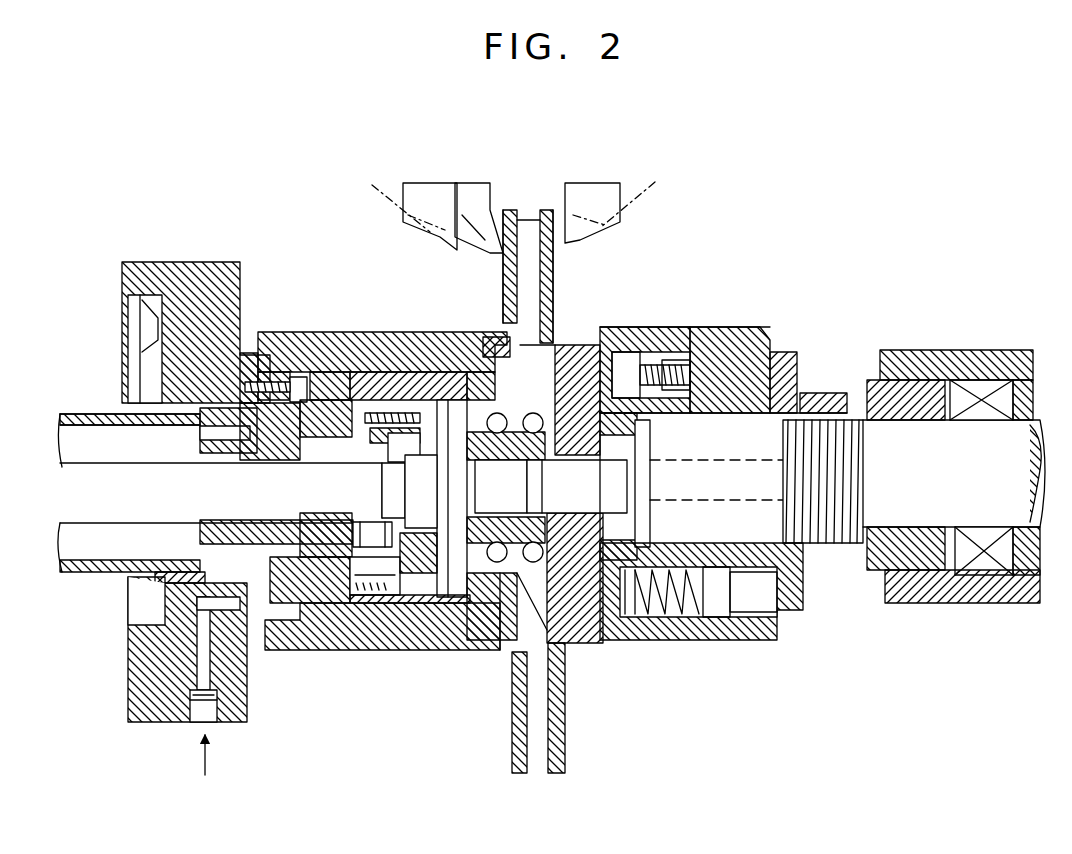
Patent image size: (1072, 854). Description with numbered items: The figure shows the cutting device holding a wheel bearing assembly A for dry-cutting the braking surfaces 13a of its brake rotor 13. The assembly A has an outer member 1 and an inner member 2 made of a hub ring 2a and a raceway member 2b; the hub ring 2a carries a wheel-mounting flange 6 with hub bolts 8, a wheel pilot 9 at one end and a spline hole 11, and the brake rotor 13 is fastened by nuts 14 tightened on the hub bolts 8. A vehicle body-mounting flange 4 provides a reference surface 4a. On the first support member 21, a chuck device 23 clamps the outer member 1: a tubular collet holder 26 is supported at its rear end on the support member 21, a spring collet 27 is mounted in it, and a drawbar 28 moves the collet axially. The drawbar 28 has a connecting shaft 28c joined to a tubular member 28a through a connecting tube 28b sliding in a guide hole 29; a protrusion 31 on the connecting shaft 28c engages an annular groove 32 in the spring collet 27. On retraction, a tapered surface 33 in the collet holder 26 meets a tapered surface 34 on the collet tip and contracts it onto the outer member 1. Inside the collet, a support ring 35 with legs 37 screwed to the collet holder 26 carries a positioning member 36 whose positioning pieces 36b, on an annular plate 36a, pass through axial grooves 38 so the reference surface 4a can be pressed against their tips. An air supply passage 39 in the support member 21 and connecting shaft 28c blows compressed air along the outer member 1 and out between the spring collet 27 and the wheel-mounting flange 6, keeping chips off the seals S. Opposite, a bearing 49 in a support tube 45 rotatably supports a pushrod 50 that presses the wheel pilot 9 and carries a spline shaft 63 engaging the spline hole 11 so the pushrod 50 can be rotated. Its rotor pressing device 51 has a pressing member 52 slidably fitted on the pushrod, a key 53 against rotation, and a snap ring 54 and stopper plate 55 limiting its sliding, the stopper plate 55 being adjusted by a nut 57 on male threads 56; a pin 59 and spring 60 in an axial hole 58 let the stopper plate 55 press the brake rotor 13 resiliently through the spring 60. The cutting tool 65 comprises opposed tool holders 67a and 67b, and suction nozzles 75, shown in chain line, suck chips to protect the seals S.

The outer member 1 is at (570, 517).
The inner member 2 is at (450, 398).
The hub ring 2a is at (575, 465).
The raceway member 2b is at (420, 462).
The vehicle body-mounting flange 4 is at (570, 385).
The reference surface 4a is at (560, 345).
The wheel-mounting flange 6 is at (580, 625).
The hub bolts 8 is at (655, 365).
The wheel pilot 9 is at (648, 447).
The spline hole 11 is at (502, 465).
The brake rotor 13 is at (530, 215).
The braking surfaces 13a is at (550, 215).
The nuts 14 is at (625, 352).
The first support member 21 is at (178, 262).
The chuck device 23 is at (283, 325).
The collet holder 26 is at (318, 340).
The spring collet 27 is at (375, 395).
The drawbar 28 is at (63, 408).
The tubular member 28a is at (100, 413).
The connecting tube 28b is at (200, 433).
The connecting shaft 28c is at (215, 474).
The guide hole 29 is at (180, 560).
The protrusion 31 is at (310, 605).
The annular groove 32 is at (345, 600).
The tapered surface 33 is at (470, 625).
The tapered surface 34 is at (500, 620).
The support ring 35 is at (355, 370).
The positioning member 36 is at (400, 372).
The annular plate 36a is at (420, 608).
The positioning pieces 36b is at (415, 412).
The legs 37 is at (375, 605).
The axial groove 38 is at (490, 340).
The air supply passage 39 is at (200, 665).
The support tube 45 is at (992, 357).
The bearing 49 is at (970, 392).
The pushrod 50 is at (898, 425).
The rotor pressing device 51 is at (718, 322).
The pressing member 52 is at (740, 345).
The key 53 is at (783, 360).
The snap ring 54 is at (670, 362).
The stopper plate 55 is at (820, 393).
The male threads 56 is at (870, 470).
The nut 57 is at (840, 420).
The axial hole 58 is at (705, 620).
The pin 59 is at (755, 605).
The spring 60 is at (660, 620).
The spline shaft 63 is at (652, 492).
The cutting tool 65 is at (455, 185).
The tool holder 67a is at (590, 200).
The tool holder 67b is at (425, 200).
The suction nozzles 75 is at (510, 196).
The seals S is at (503, 565).
The wheel bearing assembly A is at (510, 745).